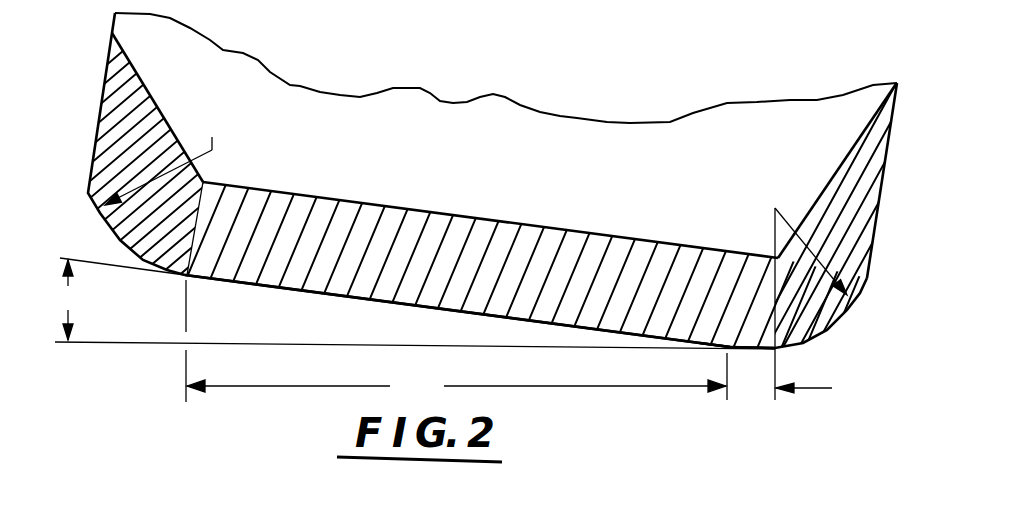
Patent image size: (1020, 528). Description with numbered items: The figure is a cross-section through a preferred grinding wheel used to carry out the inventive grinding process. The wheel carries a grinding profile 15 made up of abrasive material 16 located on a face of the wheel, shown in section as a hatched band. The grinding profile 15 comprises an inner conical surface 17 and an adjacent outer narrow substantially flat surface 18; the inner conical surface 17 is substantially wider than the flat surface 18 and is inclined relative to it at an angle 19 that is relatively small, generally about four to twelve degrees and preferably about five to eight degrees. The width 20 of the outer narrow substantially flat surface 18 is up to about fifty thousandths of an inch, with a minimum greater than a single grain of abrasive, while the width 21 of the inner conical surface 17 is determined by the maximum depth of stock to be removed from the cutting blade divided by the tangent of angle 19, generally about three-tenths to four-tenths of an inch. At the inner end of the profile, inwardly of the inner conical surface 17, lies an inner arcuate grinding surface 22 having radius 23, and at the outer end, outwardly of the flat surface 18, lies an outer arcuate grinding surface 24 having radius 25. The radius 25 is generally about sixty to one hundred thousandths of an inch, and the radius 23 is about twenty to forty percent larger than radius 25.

The grinding profile 15 is at (403, 317).
The abrasive material 16 is at (873, 233).
The inner conical surface 17 is at (300, 292).
The outer narrow substantially flat surface 18 is at (750, 350).
The angle 19 is at (412, 303).
The width of the outer narrow substantially flat surface 20 is at (779, 306).
The width of the inner conical surface 21 is at (456, 341).
The inner arcuate grinding surface 22 is at (113, 240).
The radius of the inner arcuate grinding surface 23 is at (160, 110).
The outer arcuate grinding surface 24 is at (823, 326).
The radius of the outer arcuate grinding surface 25 is at (830, 190).